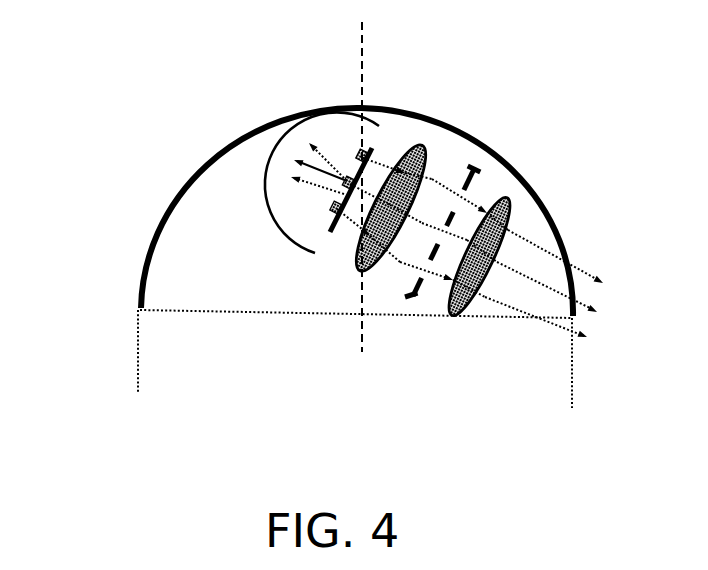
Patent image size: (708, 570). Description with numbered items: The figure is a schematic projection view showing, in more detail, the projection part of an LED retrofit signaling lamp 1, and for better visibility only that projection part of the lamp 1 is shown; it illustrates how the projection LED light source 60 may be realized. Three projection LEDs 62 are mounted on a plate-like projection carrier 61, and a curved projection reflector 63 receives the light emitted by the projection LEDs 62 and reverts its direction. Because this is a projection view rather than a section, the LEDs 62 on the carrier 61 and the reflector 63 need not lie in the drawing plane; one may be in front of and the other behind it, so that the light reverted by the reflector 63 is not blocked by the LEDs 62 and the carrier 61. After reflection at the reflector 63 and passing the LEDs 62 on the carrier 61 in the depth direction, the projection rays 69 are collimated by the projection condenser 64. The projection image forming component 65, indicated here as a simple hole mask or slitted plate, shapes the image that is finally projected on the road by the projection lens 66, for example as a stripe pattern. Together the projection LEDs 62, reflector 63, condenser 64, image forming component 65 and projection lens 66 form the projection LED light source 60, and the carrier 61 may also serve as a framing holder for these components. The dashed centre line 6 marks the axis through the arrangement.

The LED retrofit signaling lamp 1 is at (140, 107).
The optical axis 6 is at (362, 40).
The projection LED light source 60 is at (525, 377).
The projection carrier 61 is at (375, 150).
The projection LEDs 62 is at (330, 231).
The projection reflector 63 is at (289, 208).
The projection condenser 64 is at (363, 246).
The projection image forming component 65 is at (410, 297).
The projection lens 66 is at (472, 298).
The projection rays 69 is at (593, 263).